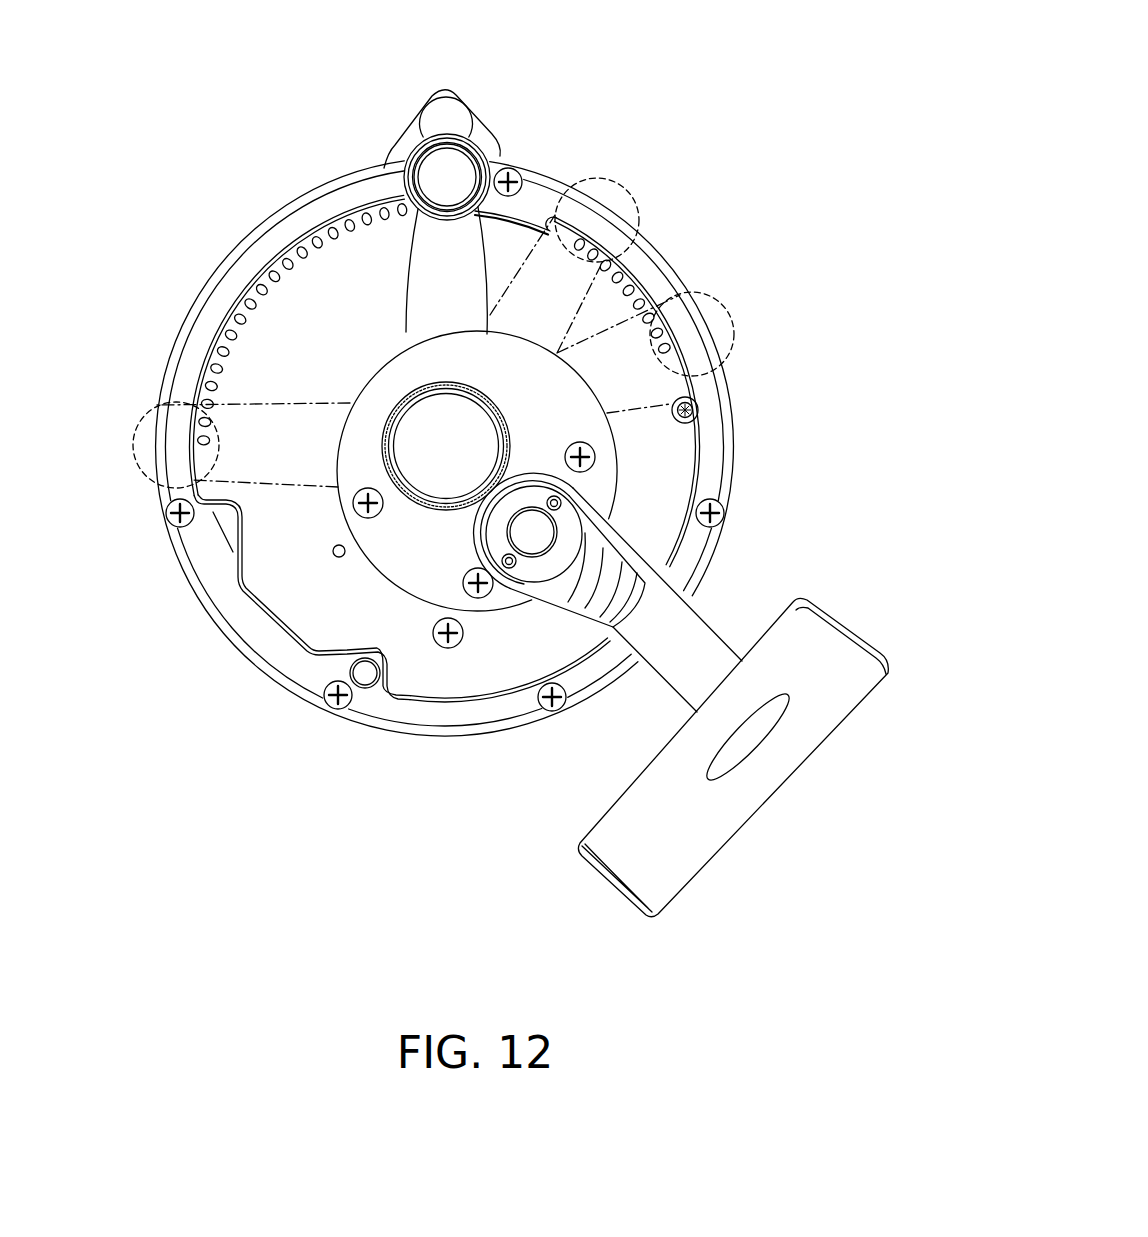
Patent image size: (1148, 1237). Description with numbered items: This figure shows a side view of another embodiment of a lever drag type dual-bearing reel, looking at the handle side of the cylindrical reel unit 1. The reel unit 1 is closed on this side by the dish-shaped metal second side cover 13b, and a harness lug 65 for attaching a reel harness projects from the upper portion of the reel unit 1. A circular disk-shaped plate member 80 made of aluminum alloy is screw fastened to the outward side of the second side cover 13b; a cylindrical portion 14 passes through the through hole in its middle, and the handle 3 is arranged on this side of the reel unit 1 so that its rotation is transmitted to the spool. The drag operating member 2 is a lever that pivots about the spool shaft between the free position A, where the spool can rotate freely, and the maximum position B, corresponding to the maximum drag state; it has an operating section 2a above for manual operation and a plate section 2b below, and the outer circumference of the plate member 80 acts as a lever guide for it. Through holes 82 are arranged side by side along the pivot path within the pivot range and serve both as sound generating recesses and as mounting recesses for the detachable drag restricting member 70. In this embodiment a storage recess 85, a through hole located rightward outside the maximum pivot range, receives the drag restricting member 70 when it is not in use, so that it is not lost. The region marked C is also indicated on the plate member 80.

The reel unit 1 is at (698, 243).
The drag operating member 2 is at (458, 170).
The operating section 2a is at (437, 175).
The plate section 2b is at (417, 253).
The handle 3 is at (748, 864).
The second side cover 13b is at (308, 668).
The cylindrical portion 14 is at (607, 508).
The harness lug 65 is at (453, 107).
The drag restricting member 70 is at (693, 403).
The plate member 80 is at (273, 590).
The through holes 82 is at (205, 372).
The storage recess 85 is at (698, 401).
The free position A is at (165, 445).
The maximum position B is at (702, 334).
The region C is at (602, 213).